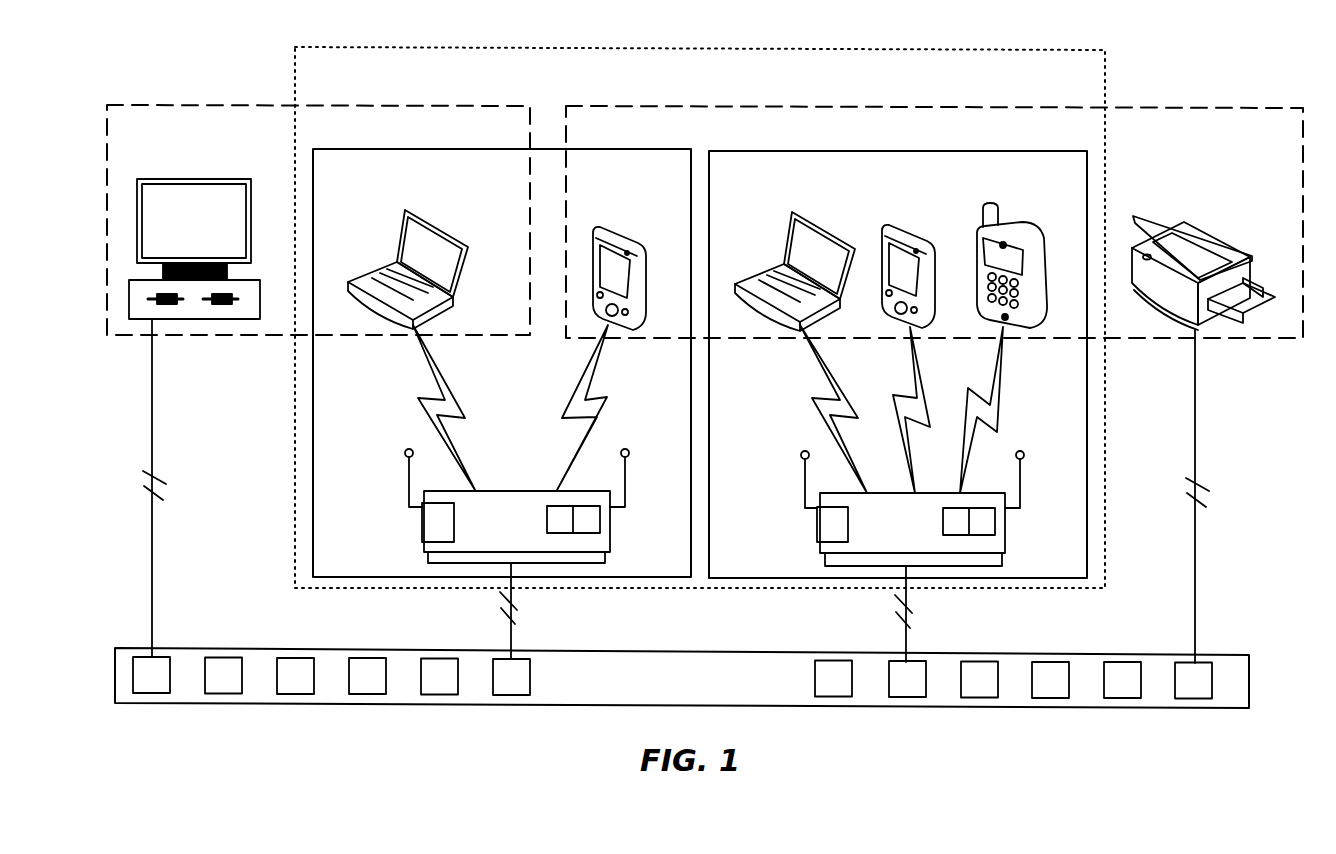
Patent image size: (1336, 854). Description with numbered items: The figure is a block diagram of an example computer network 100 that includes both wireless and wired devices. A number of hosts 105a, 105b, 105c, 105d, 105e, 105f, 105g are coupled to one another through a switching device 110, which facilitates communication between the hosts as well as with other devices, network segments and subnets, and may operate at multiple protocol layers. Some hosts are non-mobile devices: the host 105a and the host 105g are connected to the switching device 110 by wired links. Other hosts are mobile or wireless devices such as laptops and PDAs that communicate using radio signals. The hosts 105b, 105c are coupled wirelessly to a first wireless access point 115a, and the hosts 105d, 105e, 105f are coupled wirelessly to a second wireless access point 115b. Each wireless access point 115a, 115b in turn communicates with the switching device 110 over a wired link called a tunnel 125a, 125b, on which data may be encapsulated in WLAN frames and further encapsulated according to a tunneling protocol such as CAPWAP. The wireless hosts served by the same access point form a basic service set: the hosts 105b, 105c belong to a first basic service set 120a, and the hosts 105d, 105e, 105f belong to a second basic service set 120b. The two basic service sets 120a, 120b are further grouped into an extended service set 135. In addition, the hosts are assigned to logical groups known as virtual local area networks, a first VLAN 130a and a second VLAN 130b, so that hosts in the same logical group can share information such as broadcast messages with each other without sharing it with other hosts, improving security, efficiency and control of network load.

The computer network 100 is at (1179, 52).
The host 105a is at (180, 178).
The host 105b is at (422, 222).
The host 105c is at (613, 228).
The host 105d is at (808, 222).
The host 105e is at (900, 227).
The host 105f is at (1002, 227).
The host 105g is at (1195, 222).
The switching device 110 is at (1250, 683).
The wireless access point 115a is at (612, 532).
The wireless access point 115b is at (1007, 532).
The basic service set 120a is at (340, 148).
The basic service set 120b is at (738, 147).
The tunnel 125a is at (512, 637).
The tunnel 125b is at (908, 642).
The virtual local area network 130a is at (125, 105).
The virtual local area network 130b is at (588, 105).
The extended service set 135 is at (1062, 52).